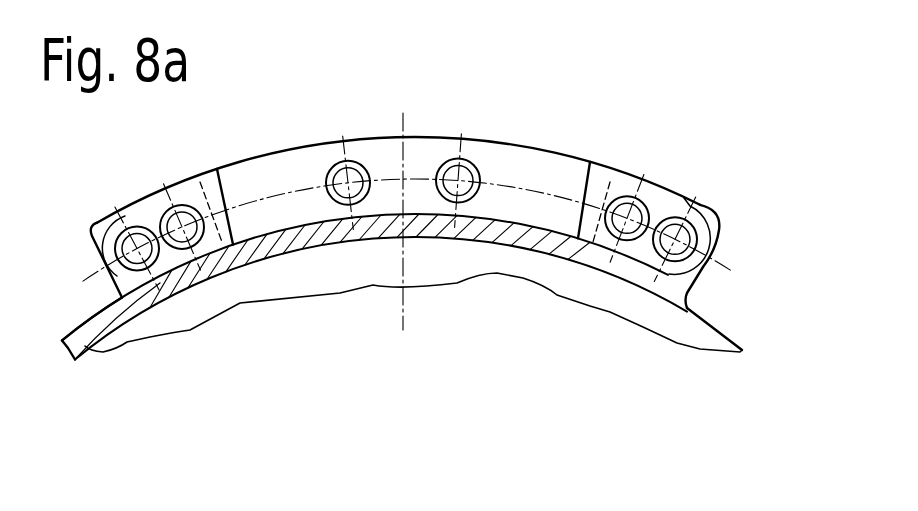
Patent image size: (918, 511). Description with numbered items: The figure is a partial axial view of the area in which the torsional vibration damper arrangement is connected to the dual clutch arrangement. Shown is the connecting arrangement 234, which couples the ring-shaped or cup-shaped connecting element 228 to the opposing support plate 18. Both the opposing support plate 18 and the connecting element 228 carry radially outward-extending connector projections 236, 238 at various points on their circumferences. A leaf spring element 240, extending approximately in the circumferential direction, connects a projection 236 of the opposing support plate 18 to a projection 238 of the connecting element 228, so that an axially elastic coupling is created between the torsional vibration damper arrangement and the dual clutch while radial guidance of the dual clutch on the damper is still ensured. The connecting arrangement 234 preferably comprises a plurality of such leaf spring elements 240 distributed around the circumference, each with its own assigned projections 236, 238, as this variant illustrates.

The opposing support plate 18 is at (712, 323).
The connecting element 228 is at (105, 323).
The connecting arrangement 234 is at (539, 128).
The connector projection 236 is at (727, 202).
The connector projection 238 is at (93, 218).
The leaf spring element 240 is at (415, 153).